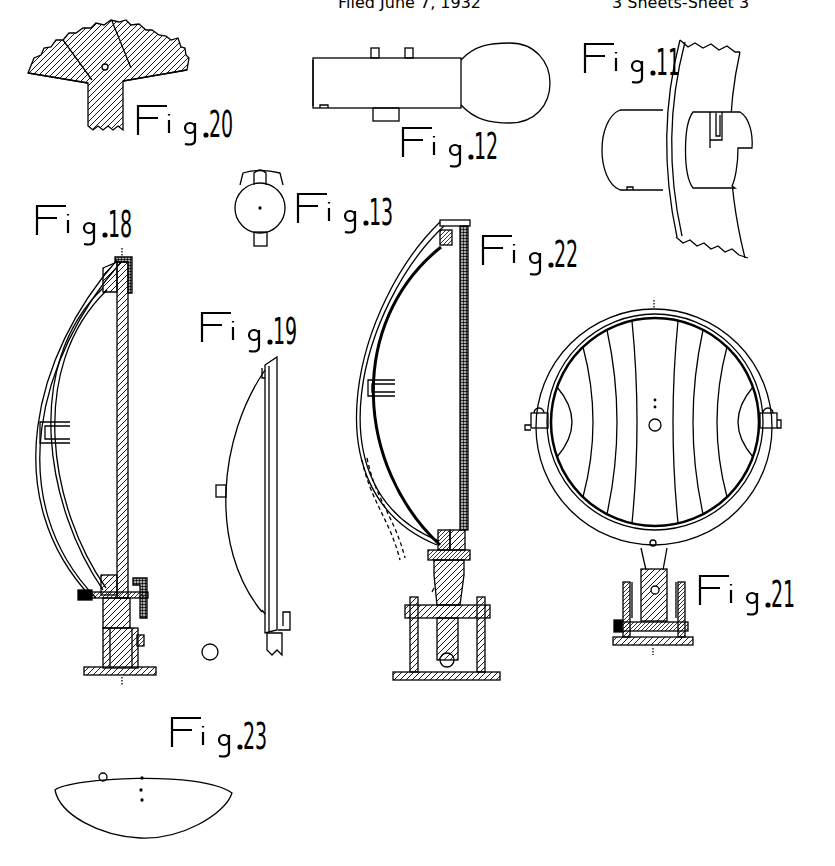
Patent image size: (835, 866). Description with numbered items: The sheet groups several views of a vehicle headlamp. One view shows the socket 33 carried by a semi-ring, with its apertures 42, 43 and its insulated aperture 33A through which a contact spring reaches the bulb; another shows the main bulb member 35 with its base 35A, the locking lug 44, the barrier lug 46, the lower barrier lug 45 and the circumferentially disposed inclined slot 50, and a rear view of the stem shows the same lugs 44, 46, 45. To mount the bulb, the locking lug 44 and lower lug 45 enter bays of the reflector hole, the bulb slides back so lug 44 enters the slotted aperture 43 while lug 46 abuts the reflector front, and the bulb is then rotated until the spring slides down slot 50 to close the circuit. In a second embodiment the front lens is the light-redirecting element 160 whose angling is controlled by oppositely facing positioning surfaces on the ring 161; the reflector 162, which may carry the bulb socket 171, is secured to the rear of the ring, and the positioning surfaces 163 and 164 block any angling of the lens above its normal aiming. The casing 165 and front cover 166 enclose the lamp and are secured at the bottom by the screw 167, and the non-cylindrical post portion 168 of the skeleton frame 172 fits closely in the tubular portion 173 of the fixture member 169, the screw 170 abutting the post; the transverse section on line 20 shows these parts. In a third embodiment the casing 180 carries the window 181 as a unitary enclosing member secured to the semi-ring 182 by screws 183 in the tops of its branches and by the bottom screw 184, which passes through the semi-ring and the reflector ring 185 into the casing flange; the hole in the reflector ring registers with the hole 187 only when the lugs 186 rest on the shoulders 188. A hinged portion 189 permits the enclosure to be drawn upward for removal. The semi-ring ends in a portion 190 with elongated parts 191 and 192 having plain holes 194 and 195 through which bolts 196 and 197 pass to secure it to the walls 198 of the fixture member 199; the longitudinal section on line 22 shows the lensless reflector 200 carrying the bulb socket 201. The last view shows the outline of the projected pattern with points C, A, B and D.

In FIG. 20, the light-redirecting element 160 is at (165, 38).
In FIG. 18, the light-redirecting element 160 is at (117, 378).
In FIG. 20, the ring 161 is at (170, 55).
In FIG. 18, the ring 161 is at (100, 552).
In FIG. 19, the ring 161 is at (278, 562).
In FIG. 12, the main bulb member 35 is at (431, 83).
In FIG. 12, the base of the main bulb member 35A is at (313, 68).
In FIG. 12, the locking lug 44 is at (370, 51).
In FIG. 13, the locking lug 44 is at (245, 180).
In FIG. 12, the barrier lug 46 is at (405, 50).
In FIG. 13, the barrier lug 46 is at (283, 177).
In FIG. 12, the lower barrier lug 45 is at (380, 113).
In FIG. 13, the lower barrier lug 45 is at (255, 238).
In FIG. 12, the inclined slot 50 is at (323, 110).
In FIG. 11, the socket 33 is at (632, 150).
In FIG. 11, the insulated aperture 33A is at (629, 191).
In FIG. 11, the aperture 42 is at (742, 167).
In FIG. 11, the aperture 43 is at (718, 138).
In FIG. 18, the section line 20 is at (122, 469).
In FIG. 21, the section line 22 is at (653, 478).
In FIG. 18, the front cover 166 is at (156, 614).
In FIG. 18, the casing 165 is at (70, 560).
In FIG. 18, the reflector 162 is at (58, 483).
In FIG. 19, the reflector 162 is at (245, 491).
In FIG. 18, the bulb socket 171 is at (62, 448).
In FIG. 19, the bulb socket 171 is at (222, 498).
In FIG. 18, the screw 167 is at (150, 595).
In FIG. 18, the post portion 168 is at (103, 620).
In FIG. 19, the post portion 168 is at (268, 645).
In FIG. 18, the tubular portion 173 is at (105, 640).
In FIG. 18, the screw 170 is at (146, 642).
In FIG. 18, the fixture member 169 is at (157, 671).
In FIG. 19, the positioning surface 164 is at (278, 368).
In FIG. 19, the positioning surface 163 is at (283, 610).
In FIG. 19, the skeleton frame 172 is at (262, 614).
In FIG. 22, the window 181 is at (460, 372).
In FIG. 22, the reflector ring 185 is at (440, 509).
In FIG. 21, the reflector ring 185 is at (770, 380).
In FIG. 22, the casing 180 is at (392, 272).
In FIG. 22, the reflector 200 is at (385, 440).
In FIG. 21, the reflector 200 is at (655, 422).
In FIG. 22, the bulb socket 201 is at (390, 378).
In FIG. 22, the hinged portion 189 is at (420, 540).
In FIG. 22, the semi-ring 182 is at (458, 528).
In FIG. 21, the semi-ring 182 is at (765, 500).
In FIG. 22, the screw 184 is at (472, 555).
In FIG. 22, the terminal portion 190 is at (462, 580).
In FIG. 21, the terminal portion 190 is at (640, 555).
In FIG. 22, the elongated part 191 is at (432, 590).
In FIG. 22, the bolt 196 is at (492, 612).
In FIG. 22, the walls 198 is at (412, 642).
In FIG. 21, the walls 198 is at (622, 598).
In FIG. 22, the plain hole 195 is at (455, 660).
In FIG. 22, the fixture member 199 is at (502, 676).
In FIG. 21, the fixture member 199 is at (695, 640).
In FIG. 21, the lugs 186 is at (778, 418).
In FIG. 21, the shoulders 188 is at (778, 430).
In FIG. 21, the screws 183 is at (526, 430).
In FIG. 21, the hole 187 is at (656, 544).
In FIG. 21, the plain hole 194 is at (660, 588).
In FIG. 21, the elongated part 192 is at (631, 585).
In FIG. 21, the bolt 197 is at (690, 627).
In FIG. 23, the point A is at (141, 790).
In FIG. 23, the point B is at (142, 800).
In FIG. 23, the point C is at (142, 778).
In FIG. 23, the point D is at (104, 781).